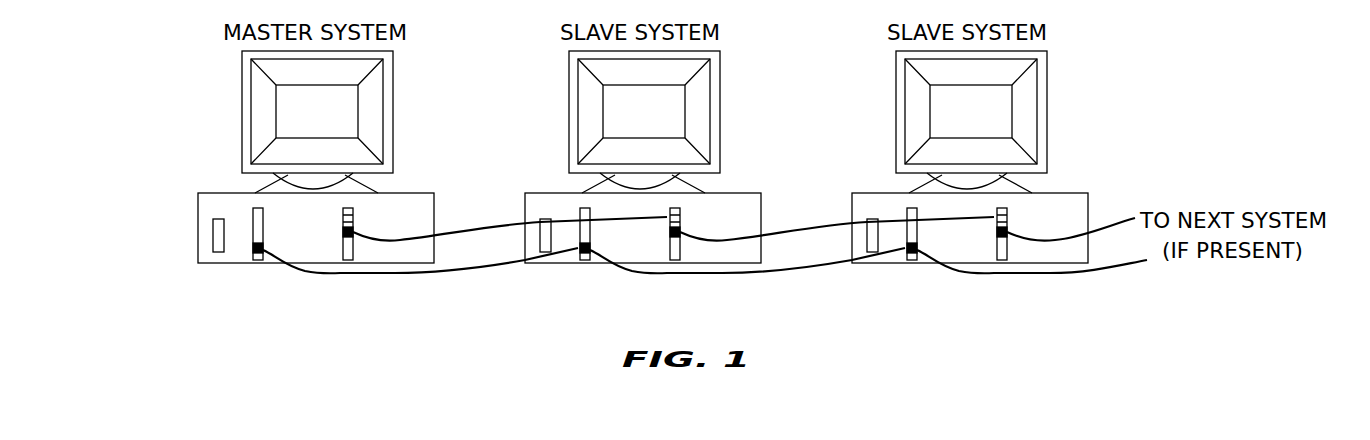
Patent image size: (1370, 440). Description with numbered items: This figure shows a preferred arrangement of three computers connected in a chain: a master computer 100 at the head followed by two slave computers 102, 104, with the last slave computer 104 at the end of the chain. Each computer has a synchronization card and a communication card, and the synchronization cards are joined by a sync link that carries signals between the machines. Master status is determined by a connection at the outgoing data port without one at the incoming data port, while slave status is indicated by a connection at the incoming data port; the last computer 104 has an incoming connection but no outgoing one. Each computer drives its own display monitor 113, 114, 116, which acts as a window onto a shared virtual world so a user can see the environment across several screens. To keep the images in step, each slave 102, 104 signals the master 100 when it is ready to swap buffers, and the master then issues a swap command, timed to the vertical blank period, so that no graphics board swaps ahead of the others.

The master computer 100 is at (242, 63).
The slave computer 102 is at (602, 106).
The slave computer 104 is at (929, 106).
The display monitor 113 is at (260, 115).
The display monitor 114 is at (597, 111).
The display monitor 116 is at (924, 111).